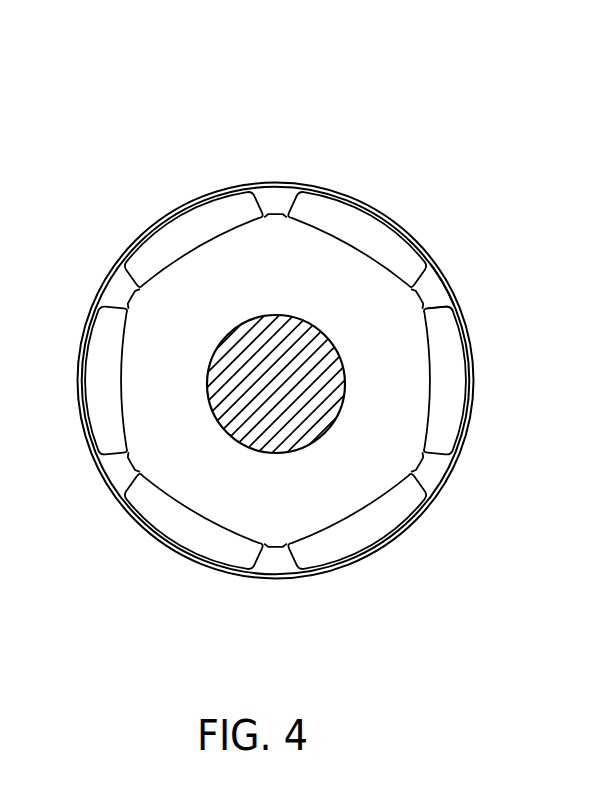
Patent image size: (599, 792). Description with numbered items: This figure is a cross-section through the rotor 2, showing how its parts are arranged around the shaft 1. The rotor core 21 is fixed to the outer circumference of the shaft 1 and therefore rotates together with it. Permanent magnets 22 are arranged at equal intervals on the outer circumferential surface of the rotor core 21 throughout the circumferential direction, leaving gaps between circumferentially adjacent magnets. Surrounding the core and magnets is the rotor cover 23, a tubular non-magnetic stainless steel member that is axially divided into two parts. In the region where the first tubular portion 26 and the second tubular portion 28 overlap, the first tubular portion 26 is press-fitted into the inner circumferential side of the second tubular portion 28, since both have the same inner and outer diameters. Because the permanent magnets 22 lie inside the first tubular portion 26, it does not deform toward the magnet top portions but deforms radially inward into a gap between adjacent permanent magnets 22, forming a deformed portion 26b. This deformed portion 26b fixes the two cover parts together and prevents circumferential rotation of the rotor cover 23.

The shaft 1 is at (242, 413).
The rotor 2 is at (421, 104).
The rotor core 21 is at (223, 262).
The permanent magnets 22 is at (181, 241).
The rotor cover 23 is at (267, 188).
The first tubular portion 26 is at (430, 258).
The deformed portion 26b is at (452, 307).
The second tubular portion 28 is at (447, 270).